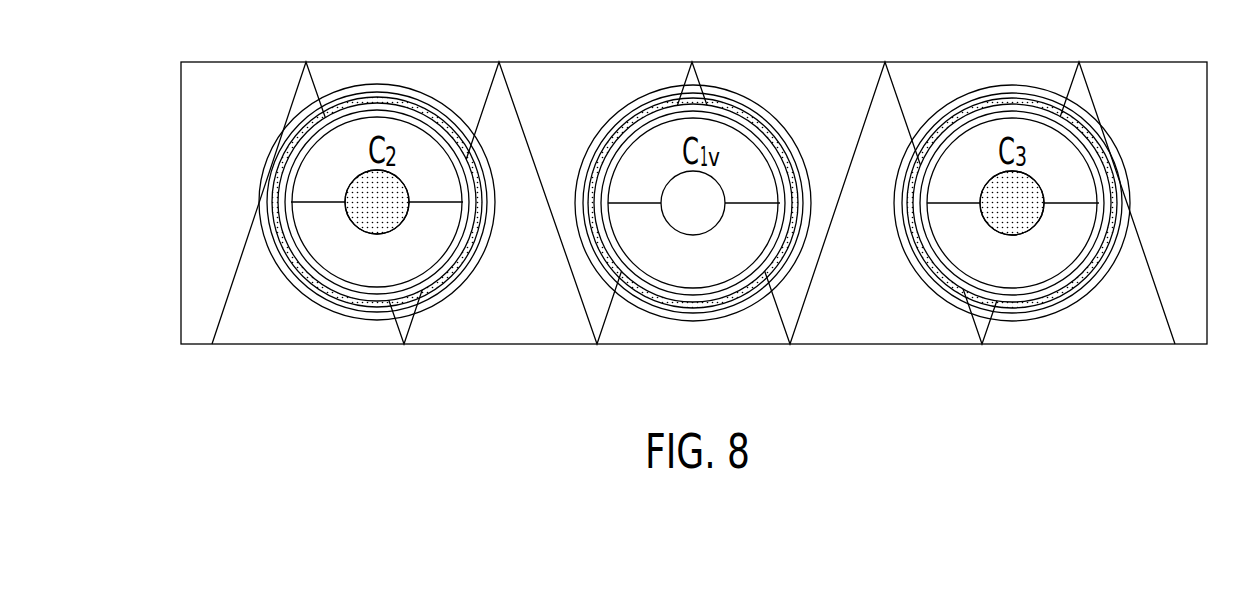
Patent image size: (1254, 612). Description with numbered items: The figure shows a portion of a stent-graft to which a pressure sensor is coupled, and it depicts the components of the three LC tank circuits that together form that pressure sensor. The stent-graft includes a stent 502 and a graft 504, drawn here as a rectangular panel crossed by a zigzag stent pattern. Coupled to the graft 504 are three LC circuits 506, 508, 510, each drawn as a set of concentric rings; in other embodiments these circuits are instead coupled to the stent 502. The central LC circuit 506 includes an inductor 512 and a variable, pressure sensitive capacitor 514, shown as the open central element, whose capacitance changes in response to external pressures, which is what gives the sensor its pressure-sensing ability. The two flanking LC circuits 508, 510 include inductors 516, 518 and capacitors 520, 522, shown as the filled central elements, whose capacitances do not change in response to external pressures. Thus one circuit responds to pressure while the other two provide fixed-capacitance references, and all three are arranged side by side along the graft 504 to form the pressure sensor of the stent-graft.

The stent 502 is at (212, 333).
The graft 504 is at (202, 113).
The LC circuit 506 is at (733, 272).
The LC circuit 508 is at (355, 272).
The LC circuit 510 is at (1073, 235).
The inductor 512 is at (683, 100).
The variable, pressure sensitive capacitor 514 is at (693, 218).
The inductor 516 is at (378, 100).
The inductor 518 is at (1017, 100).
The capacitor 520 is at (390, 215).
The capacitor 522 is at (1022, 217).